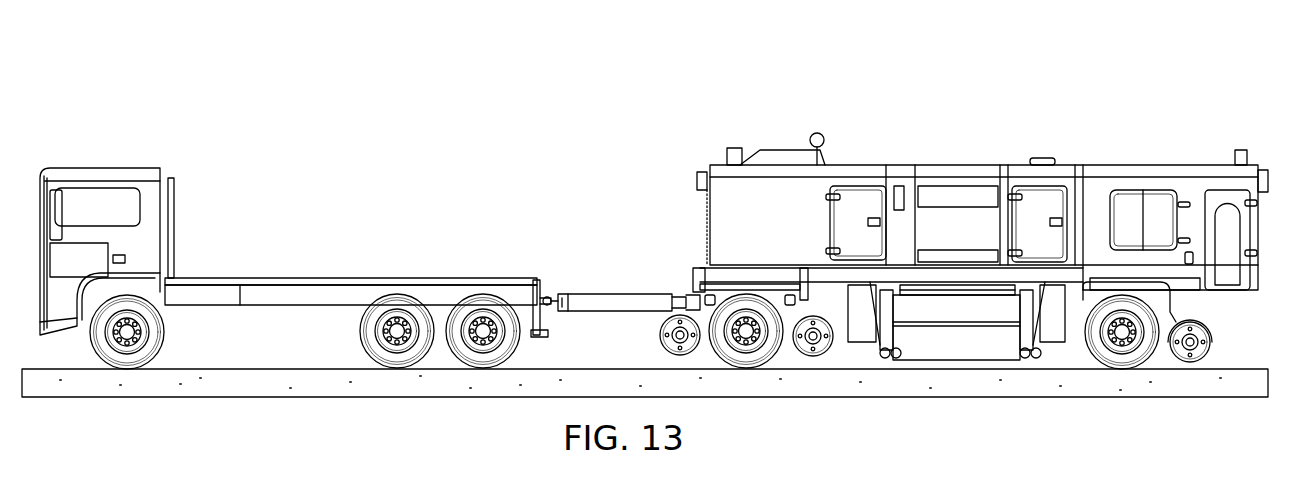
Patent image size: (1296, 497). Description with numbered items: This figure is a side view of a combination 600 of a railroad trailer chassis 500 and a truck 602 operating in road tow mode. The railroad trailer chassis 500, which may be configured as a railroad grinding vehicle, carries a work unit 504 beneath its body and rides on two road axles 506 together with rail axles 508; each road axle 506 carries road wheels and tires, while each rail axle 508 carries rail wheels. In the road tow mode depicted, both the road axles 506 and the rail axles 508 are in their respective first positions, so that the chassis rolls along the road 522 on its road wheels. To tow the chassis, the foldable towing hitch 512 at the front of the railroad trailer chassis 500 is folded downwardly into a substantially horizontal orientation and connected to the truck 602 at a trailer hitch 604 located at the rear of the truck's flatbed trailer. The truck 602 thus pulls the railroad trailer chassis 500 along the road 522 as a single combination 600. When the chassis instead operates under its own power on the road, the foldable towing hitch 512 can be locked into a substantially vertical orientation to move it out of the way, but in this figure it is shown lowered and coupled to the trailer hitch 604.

The combination 600 is at (424, 72).
The truck 602 is at (356, 277).
The trailer hitch 604 is at (548, 297).
The foldable towing hitch 512 is at (616, 292).
The railroad trailer chassis 500 is at (929, 259).
The work unit 504 is at (946, 345).
The road axles 506 is at (772, 368).
The rail axles 508 is at (660, 338).
The road 522 is at (298, 397).